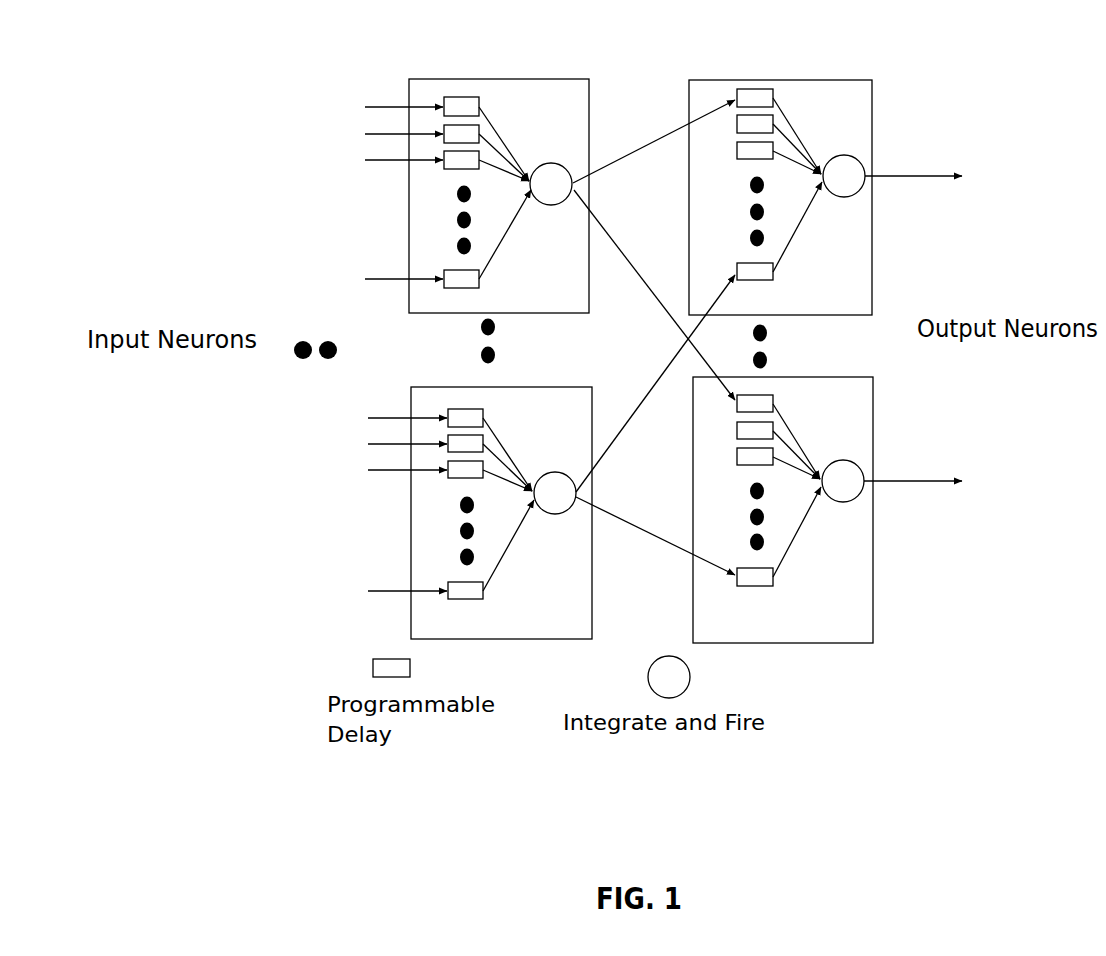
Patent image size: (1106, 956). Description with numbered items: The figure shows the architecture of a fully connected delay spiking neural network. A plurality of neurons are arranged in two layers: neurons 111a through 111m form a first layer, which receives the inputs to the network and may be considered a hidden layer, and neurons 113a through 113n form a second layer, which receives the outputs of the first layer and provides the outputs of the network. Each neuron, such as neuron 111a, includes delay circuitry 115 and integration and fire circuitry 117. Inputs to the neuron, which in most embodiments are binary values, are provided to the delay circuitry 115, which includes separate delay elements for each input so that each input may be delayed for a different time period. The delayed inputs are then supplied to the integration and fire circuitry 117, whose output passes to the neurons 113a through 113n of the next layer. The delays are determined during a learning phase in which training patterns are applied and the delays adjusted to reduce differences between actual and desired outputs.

The neuron 111a is at (517, 167).
The neuron 111m is at (530, 387).
The neuron 113a is at (783, 77).
The neuron 113n is at (793, 375).
The delay circuitry 115 is at (463, 88).
The integration and fire circuitry 117 is at (561, 160).